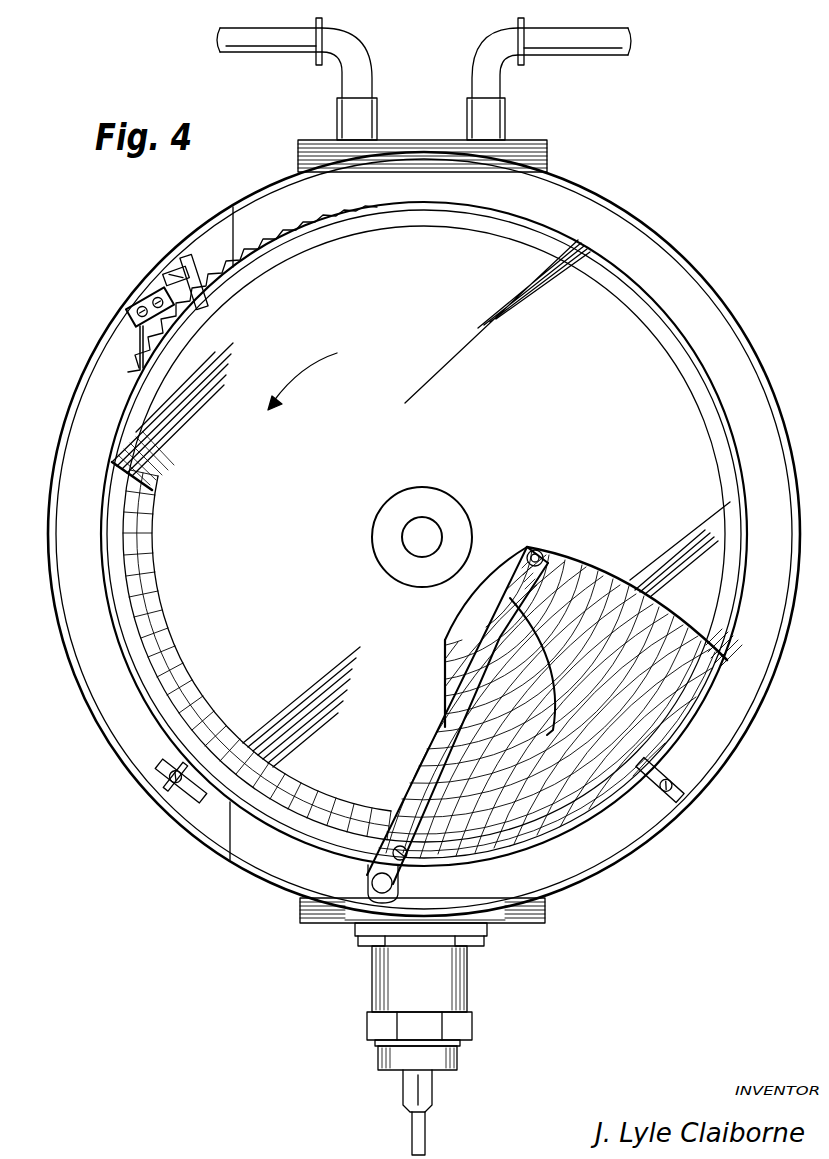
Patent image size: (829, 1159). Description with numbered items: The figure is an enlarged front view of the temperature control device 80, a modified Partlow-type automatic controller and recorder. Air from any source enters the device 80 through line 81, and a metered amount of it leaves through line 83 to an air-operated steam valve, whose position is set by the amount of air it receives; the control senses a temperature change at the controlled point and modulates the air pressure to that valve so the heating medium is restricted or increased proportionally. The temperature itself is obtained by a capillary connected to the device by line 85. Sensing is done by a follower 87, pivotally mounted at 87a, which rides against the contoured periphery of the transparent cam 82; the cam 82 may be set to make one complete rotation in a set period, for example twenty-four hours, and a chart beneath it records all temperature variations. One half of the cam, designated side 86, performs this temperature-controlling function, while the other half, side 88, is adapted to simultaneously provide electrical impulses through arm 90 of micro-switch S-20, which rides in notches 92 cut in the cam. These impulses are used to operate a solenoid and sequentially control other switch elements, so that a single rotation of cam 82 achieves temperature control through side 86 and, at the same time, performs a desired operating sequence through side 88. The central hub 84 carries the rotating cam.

The temperature control device 80 is at (746, 340).
The line 81 is at (608, 40).
The cam 82 is at (657, 298).
The line 83 is at (240, 35).
The hub 84 is at (427, 530).
The line 85 is at (424, 1135).
The side of cam 86 is at (717, 442).
The follower 87 is at (553, 553).
The pivot 87a is at (380, 884).
The side of cam 88 is at (143, 407).
The arm 90 is at (140, 346).
The notches 92 is at (150, 366).
The micro-switch S-20 is at (148, 297).